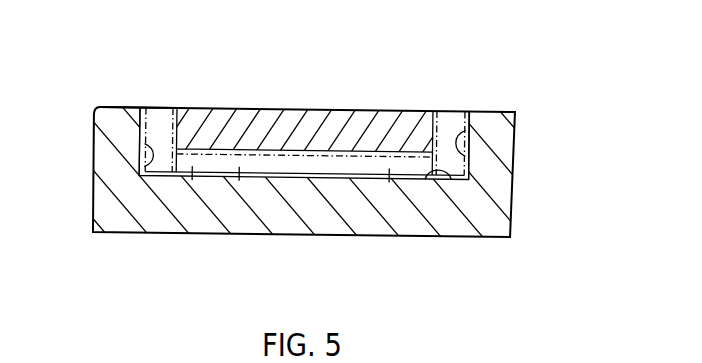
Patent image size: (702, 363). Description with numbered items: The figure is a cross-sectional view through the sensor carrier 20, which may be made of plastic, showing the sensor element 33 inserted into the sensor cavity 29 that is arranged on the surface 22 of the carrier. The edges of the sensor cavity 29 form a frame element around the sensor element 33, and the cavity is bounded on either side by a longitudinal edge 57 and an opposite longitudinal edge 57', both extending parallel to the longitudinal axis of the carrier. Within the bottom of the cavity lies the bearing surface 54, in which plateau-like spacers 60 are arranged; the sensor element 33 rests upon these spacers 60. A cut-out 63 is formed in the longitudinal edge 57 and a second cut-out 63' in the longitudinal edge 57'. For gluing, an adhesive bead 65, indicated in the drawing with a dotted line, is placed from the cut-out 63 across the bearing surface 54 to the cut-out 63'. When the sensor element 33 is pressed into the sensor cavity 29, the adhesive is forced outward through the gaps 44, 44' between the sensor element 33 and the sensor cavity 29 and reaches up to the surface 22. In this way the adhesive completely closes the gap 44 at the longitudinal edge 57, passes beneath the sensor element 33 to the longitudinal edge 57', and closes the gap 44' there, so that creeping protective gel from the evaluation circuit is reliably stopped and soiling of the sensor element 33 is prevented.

The sensor carrier 20 is at (507, 195).
The surface 22 is at (127, 104).
The sensor cavity 29 is at (270, 136).
The sensor element 33 is at (340, 127).
The gap 44 is at (199, 102).
The gap 44' is at (463, 106).
The cut-out 63 is at (158, 111).
The cut-out 63' is at (503, 123).
The longitudinal edge 57 is at (96, 170).
The longitudinal edge 57' is at (524, 153).
The bearing surface 54 is at (443, 178).
The adhesive bead 65 is at (193, 167).
The spacers 60 is at (240, 168).